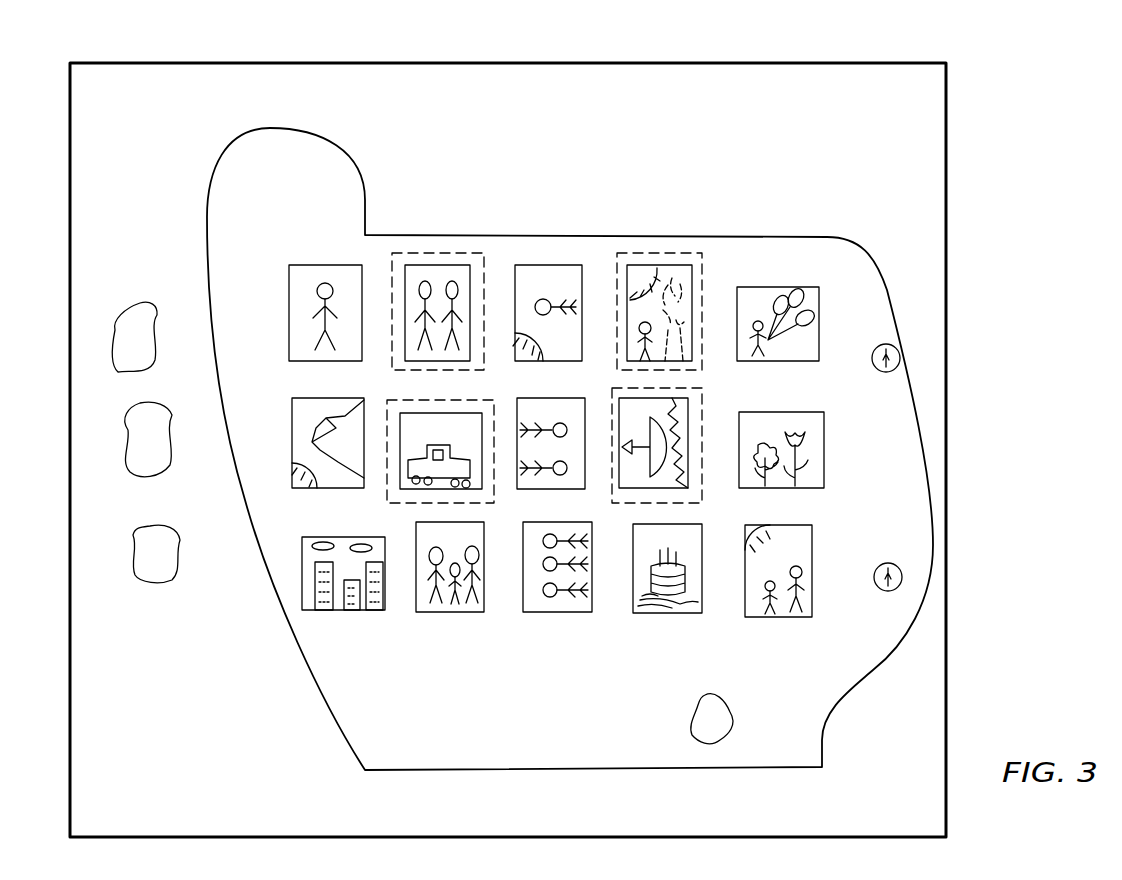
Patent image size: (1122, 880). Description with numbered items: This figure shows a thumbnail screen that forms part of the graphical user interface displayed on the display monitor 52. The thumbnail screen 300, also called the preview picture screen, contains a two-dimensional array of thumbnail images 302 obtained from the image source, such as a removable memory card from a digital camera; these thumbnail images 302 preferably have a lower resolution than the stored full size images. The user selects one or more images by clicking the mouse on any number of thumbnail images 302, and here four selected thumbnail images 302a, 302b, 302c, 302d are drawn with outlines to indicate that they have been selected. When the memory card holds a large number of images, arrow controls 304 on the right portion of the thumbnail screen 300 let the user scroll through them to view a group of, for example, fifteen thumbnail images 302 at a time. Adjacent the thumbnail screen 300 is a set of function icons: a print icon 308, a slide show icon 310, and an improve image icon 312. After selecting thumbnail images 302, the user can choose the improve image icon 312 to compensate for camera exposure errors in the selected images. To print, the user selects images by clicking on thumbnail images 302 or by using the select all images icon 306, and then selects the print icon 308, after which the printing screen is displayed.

The display monitor 52 is at (946, 145).
The thumbnail screen 300 is at (830, 237).
The thumbnail images 302 is at (290, 280).
The selected thumbnail image 302a is at (455, 253).
The selected thumbnail image 302b is at (673, 252).
The selected thumbnail image 302c is at (477, 402).
The selected thumbnail image 302d is at (703, 395).
The arrow controls 304 is at (900, 355).
The select all images icon 306 is at (732, 710).
The print icon 308 is at (137, 300).
The slide show icon 310 is at (163, 407).
The improve image icon 312 is at (170, 527).